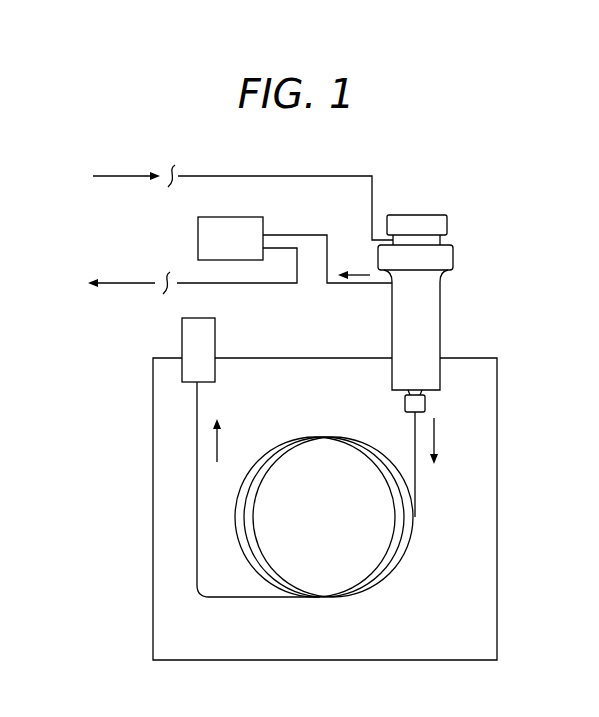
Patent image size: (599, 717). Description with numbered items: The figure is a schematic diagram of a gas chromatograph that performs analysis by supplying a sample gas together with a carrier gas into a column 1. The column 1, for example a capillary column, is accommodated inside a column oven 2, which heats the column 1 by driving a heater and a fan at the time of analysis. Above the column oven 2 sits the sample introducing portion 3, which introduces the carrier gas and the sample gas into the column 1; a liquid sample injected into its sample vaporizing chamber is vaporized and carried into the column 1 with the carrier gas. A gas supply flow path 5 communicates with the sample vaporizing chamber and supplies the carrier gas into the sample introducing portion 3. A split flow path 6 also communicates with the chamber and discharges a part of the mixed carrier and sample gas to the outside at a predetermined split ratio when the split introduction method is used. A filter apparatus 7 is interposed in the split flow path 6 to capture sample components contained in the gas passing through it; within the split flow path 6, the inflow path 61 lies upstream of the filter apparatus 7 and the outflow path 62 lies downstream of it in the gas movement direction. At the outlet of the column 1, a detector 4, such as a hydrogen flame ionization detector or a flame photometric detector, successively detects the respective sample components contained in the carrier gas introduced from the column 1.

The column 1 is at (390, 578).
The column oven 2 is at (153, 560).
The sample introducing portion 3 is at (442, 319).
The detector 4 is at (182, 337).
The gas supply flow path 5 is at (302, 176).
The split flow path 6 is at (316, 229).
The inflow path 61 is at (357, 288).
The outflow path 62 is at (270, 288).
The filter apparatus 7 is at (198, 234).